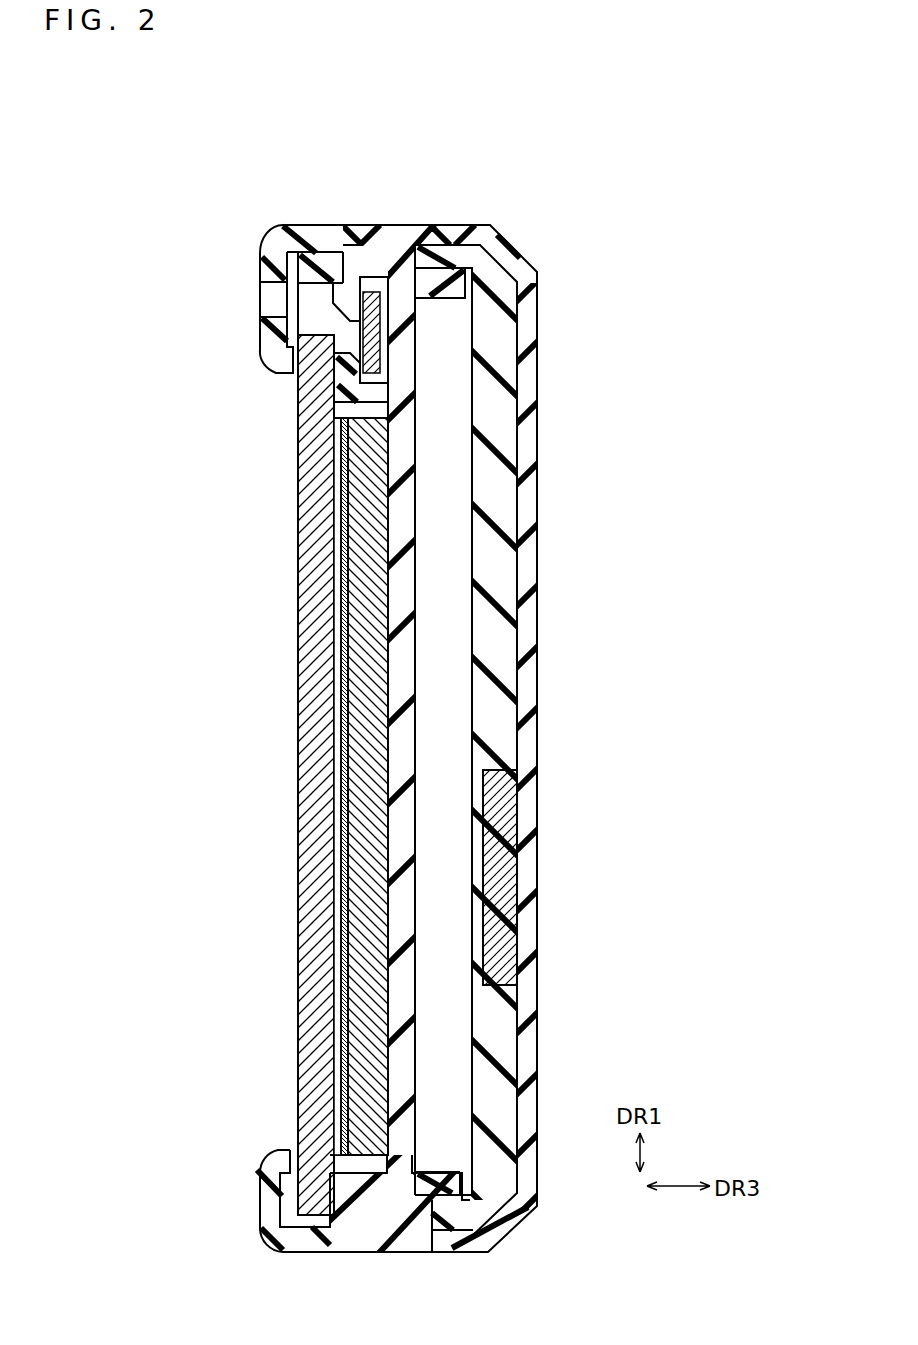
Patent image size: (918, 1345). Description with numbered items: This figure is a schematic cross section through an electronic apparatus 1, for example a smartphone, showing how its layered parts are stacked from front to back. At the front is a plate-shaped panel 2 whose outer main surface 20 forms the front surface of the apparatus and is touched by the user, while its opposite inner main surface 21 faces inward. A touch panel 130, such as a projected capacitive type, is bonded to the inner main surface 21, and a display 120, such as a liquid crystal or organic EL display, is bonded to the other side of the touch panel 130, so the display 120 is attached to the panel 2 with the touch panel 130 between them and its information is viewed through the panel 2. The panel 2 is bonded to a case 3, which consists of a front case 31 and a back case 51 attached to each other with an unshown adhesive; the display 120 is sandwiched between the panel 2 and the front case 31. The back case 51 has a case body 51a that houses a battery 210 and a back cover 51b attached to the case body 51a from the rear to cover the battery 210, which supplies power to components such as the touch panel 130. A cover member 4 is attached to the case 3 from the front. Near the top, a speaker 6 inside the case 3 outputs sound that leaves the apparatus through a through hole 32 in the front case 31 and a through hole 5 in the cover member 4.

The electronic apparatus 1 is at (471, 180).
The panel 2 is at (300, 612).
The outer main surface 20 is at (296, 707).
The inner main surface 21 is at (351, 683).
The display 120 is at (368, 597).
The touch panel 130 is at (351, 640).
The case 3 is at (708, 376).
The front case 31 is at (398, 391).
The through hole 32 is at (340, 318).
The cover member 4 is at (268, 244).
The through hole 5 is at (275, 303).
The speaker 6 is at (368, 332).
The back case 51 is at (660, 478).
The case body 51a is at (498, 527).
The back cover 51b is at (533, 489).
The battery 210 is at (497, 855).